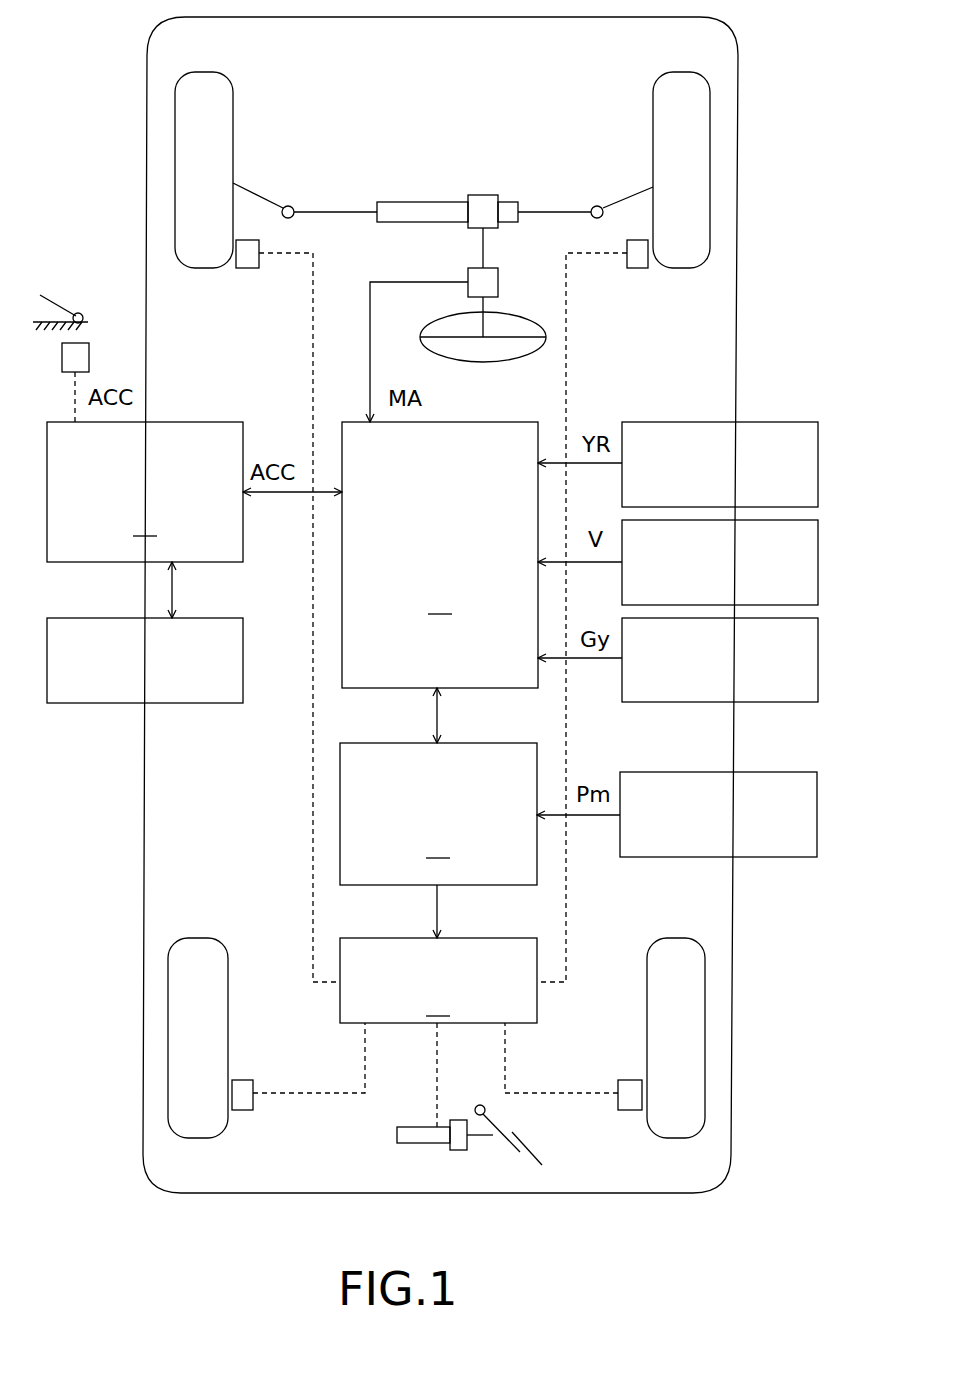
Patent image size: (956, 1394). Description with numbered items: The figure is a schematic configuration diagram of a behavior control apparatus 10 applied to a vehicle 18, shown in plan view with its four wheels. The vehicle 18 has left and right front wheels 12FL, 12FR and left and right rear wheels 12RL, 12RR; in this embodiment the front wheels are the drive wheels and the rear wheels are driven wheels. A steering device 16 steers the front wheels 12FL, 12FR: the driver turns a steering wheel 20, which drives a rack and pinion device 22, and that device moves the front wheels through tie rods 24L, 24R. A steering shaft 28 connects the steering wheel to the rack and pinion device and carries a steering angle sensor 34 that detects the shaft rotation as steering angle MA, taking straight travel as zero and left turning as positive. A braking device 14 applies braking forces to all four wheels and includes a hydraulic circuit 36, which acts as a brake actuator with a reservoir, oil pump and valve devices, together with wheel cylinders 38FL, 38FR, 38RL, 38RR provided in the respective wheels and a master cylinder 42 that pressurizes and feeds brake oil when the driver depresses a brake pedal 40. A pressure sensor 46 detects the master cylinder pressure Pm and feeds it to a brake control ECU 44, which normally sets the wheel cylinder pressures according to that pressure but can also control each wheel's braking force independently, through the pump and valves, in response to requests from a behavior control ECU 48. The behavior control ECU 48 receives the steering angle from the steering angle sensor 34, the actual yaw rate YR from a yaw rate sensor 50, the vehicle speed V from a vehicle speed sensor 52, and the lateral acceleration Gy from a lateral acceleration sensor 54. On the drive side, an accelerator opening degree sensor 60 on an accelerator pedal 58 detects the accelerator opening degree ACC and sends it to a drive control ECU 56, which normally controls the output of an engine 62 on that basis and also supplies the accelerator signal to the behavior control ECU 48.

The behavior control apparatus 10 is at (477, 605).
The left front wheel 12FL is at (175, 170).
The right front wheel 12FR is at (710, 172).
The left rear wheel 12RL is at (168, 1048).
The right rear wheel 12RR is at (705, 1048).
The braking device 14 is at (358, 1123).
The steering device 16 is at (443, 250).
The vehicle 18 is at (740, 300).
The steering wheel 20 is at (482, 362).
The rack and pinion device 22 is at (466, 192).
The left tie rod 24L is at (249, 192).
The right tie rod 24R is at (640, 191).
The steering shaft 28 is at (478, 246).
The steering angle sensor 34 is at (499, 282).
The hydraulic circuit 36 is at (438, 980).
The left front wheel cylinder 38FL is at (247, 268).
The right front wheel cylinder 38FR is at (637, 268).
The left rear wheel cylinder 38RL is at (243, 1088).
The right rear wheel cylinder 38RR is at (631, 1088).
The brake pedal 40 is at (540, 1150).
The master cylinder 42 is at (427, 1145).
The brake control ECU 44 is at (438, 814).
The pressure sensor 46 is at (768, 857).
The behavior control ECU 48 is at (440, 555).
The yaw rate sensor 50 is at (768, 422).
The vehicle speed sensor 52 is at (818, 563).
The lateral acceleration sensor 54 is at (765, 702).
The drive control ECU 56 is at (145, 492).
The accelerator pedal 58 is at (52, 303).
The accelerator opening degree sensor 60 is at (62, 357).
The engine 62 is at (183, 705).